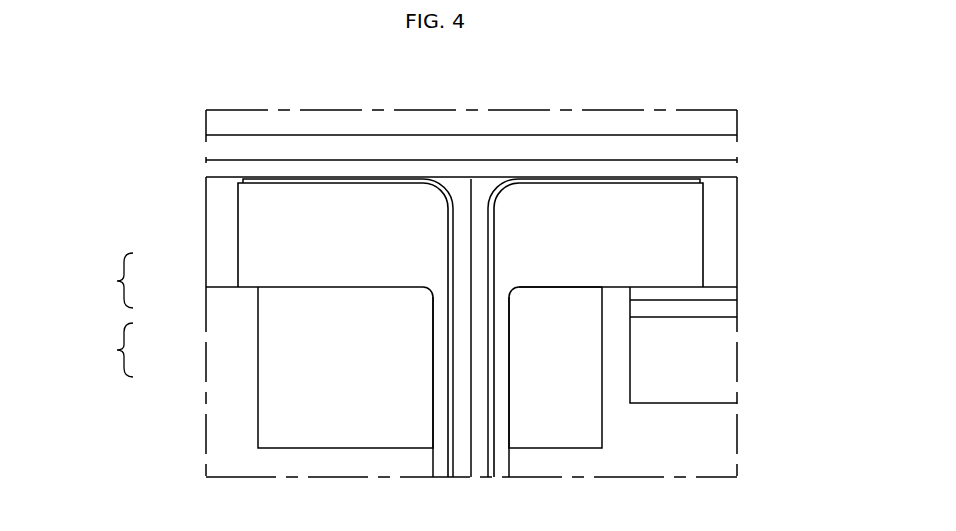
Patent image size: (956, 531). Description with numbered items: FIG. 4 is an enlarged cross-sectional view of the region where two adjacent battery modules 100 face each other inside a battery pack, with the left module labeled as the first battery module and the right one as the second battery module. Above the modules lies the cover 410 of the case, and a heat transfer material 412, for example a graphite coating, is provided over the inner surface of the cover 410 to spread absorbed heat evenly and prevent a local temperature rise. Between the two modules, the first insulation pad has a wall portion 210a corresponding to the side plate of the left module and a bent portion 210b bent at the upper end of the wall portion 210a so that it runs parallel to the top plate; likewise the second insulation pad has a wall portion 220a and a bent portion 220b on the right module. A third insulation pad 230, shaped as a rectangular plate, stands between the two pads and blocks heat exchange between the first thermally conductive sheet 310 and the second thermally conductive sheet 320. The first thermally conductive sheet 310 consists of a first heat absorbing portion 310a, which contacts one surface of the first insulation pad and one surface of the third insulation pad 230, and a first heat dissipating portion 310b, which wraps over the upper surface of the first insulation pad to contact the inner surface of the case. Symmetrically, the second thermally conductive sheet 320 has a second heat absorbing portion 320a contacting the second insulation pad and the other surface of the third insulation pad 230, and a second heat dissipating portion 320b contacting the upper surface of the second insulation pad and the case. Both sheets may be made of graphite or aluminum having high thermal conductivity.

The battery module 100 is at (224, 468).
The wall portion 210a is at (440, 457).
The bent portion 210b is at (289, 213).
The wall portion 220a is at (503, 458).
The bent portion 220b is at (657, 215).
The third insulation pad 230 is at (471, 180).
The first thermally conductive sheet 310 is at (105, 280).
The first heat absorbing portion 310a is at (455, 478).
The first heat dissipating portion 310b is at (367, 180).
The second thermally conductive sheet 320 is at (105, 350).
The second heat absorbing portion 320a is at (436, 316).
The second heat dissipating portion 320b is at (582, 181).
The cover 410 is at (727, 147).
The heat transfer material 412 is at (727, 168).